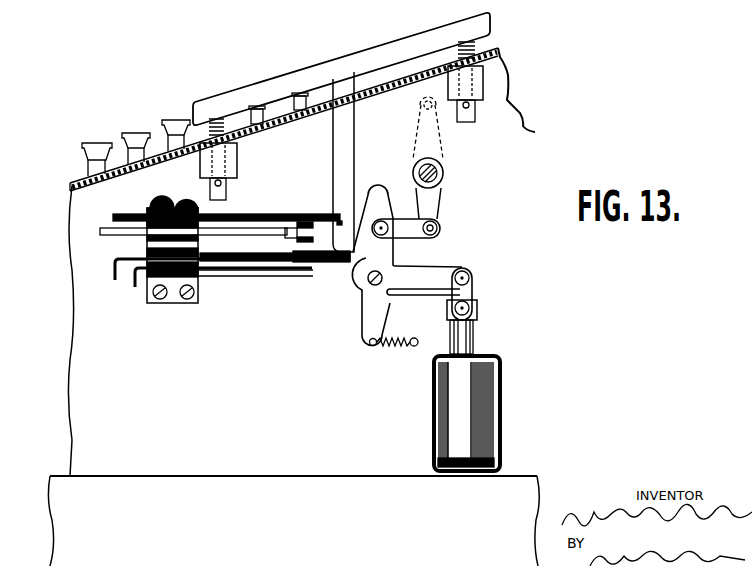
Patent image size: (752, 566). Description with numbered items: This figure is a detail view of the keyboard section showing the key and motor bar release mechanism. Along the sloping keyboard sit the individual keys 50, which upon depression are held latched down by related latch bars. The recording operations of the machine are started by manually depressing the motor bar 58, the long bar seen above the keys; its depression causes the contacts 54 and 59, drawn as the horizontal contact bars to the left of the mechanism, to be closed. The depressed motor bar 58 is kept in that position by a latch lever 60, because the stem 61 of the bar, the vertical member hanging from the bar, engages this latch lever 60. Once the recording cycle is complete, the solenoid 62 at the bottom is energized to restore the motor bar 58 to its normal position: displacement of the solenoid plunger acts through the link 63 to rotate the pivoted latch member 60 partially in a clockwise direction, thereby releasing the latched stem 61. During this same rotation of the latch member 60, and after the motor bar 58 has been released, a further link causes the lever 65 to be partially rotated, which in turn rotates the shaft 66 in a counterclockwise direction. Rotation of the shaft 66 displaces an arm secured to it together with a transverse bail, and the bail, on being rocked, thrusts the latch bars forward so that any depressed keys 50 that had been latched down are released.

The keys 50 is at (128, 133).
The contact 54 is at (325, 268).
The motor bar 58 is at (287, 77).
The contact 59 is at (317, 213).
The latch lever 60 is at (375, 252).
The stem 61 is at (343, 157).
The solenoid 62 is at (448, 413).
The link 63 is at (473, 295).
The lever 65 is at (433, 206).
The shaft 66 is at (443, 172).